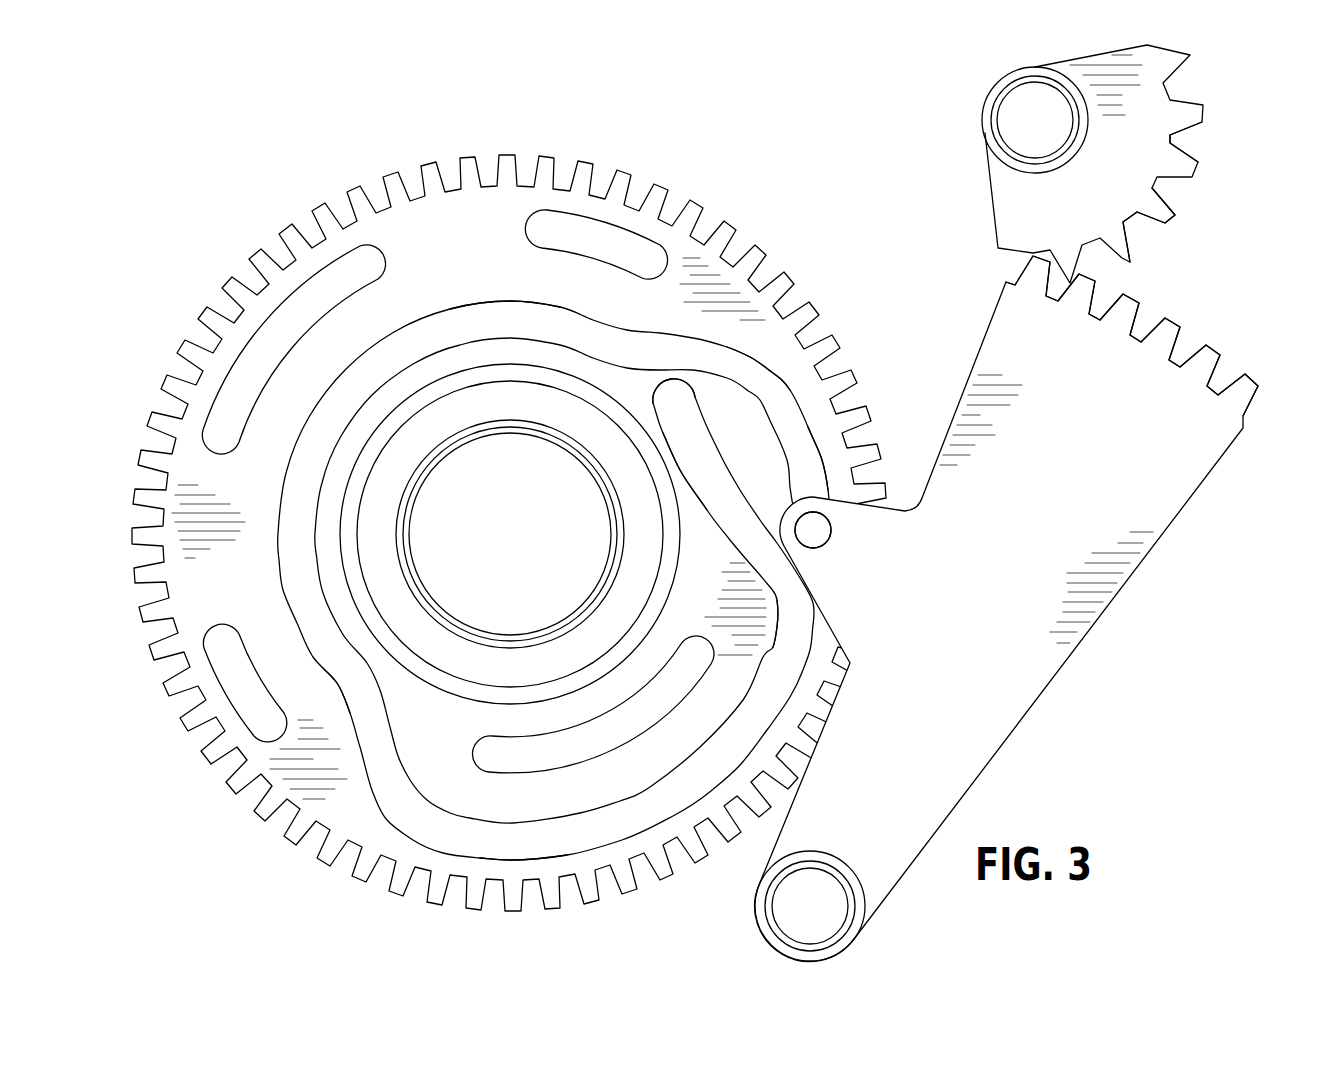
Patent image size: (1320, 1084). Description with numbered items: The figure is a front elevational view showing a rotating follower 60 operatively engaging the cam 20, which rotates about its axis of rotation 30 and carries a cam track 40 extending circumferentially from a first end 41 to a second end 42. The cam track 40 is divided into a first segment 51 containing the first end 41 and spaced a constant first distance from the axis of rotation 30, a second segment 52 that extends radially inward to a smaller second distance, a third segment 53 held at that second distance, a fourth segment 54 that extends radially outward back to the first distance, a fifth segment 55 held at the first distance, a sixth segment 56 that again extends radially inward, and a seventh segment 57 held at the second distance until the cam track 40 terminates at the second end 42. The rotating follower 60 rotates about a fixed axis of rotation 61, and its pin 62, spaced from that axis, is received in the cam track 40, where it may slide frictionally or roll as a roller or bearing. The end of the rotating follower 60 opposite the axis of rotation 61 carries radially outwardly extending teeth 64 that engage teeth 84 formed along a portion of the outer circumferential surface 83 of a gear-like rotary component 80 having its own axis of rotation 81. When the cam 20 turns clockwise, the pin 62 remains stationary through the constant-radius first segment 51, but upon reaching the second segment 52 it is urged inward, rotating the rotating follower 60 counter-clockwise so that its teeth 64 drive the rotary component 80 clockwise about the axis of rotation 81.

The cam 20 is at (770, 251).
The axis of rotation 30 is at (512, 528).
The cam track 40 is at (802, 428).
The first end 41 is at (818, 540).
The second end 42 is at (670, 392).
The first segment 51 is at (806, 488).
The second segment 52 is at (755, 376).
The third segment 53 is at (467, 322).
The fourth segment 54 is at (343, 665).
The fifth segment 55 is at (538, 829).
The sixth segment 56 is at (784, 599).
The seventh segment 57 is at (706, 448).
The rotating follower 60 is at (1074, 682).
The axis of rotation 61 is at (814, 904).
The pin 62 is at (830, 543).
The teeth 64 is at (1248, 388).
The rotary component 80 is at (1173, 187).
The axis of rotation 81 is at (1033, 118).
The outer circumferential surface 83 is at (1172, 135).
The teeth 84 is at (1128, 262).